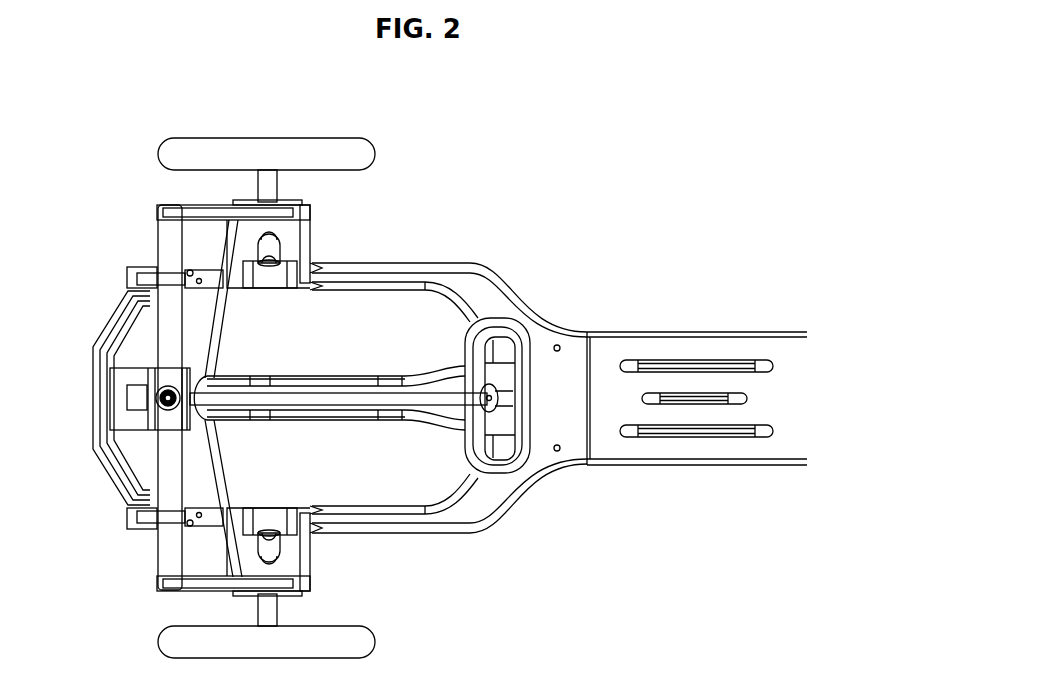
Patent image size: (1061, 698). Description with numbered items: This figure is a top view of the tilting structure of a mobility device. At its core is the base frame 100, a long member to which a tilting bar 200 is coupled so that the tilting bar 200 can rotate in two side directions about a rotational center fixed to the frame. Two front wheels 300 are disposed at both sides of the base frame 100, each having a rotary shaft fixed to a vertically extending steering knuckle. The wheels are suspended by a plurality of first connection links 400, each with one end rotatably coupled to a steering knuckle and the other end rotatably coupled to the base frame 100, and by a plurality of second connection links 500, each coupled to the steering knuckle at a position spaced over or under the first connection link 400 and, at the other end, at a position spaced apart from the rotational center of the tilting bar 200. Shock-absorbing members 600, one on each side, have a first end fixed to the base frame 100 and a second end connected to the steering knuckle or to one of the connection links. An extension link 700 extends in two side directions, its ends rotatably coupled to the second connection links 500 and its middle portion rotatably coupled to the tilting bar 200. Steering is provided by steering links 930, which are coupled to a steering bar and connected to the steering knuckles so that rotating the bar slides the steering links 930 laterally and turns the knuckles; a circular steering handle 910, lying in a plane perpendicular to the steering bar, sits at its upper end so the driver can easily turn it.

The base frame 100 is at (624, 450).
The tilting bar 200 is at (332, 393).
The front wheels 300 is at (370, 152).
The first connection links 400 is at (308, 558).
The second connection links 500 is at (165, 237).
The shock-absorbing members 600 is at (270, 237).
The extension link 700 is at (170, 467).
The steering handle 910 is at (502, 327).
The steering links 930 is at (218, 478).